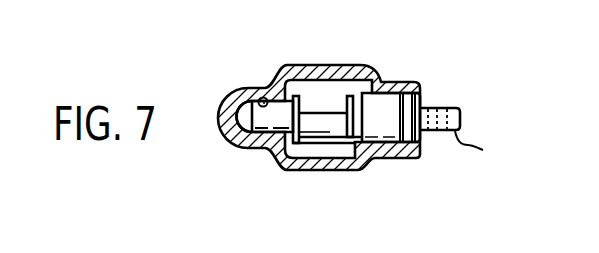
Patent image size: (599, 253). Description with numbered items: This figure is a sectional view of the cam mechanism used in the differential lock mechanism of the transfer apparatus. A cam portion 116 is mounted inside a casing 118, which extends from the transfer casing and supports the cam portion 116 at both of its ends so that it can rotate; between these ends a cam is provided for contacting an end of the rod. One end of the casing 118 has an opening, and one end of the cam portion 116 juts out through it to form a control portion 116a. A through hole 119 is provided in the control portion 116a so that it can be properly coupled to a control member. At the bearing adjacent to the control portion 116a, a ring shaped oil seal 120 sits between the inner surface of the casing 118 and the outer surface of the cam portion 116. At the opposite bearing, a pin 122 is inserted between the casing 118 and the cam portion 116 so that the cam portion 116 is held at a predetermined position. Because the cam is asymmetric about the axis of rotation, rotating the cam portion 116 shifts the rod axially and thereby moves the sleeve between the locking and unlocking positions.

The casing 118 is at (284, 172).
The cam portion 116 is at (333, 144).
The control portion 116a is at (492, 149).
The through hole 119 is at (433, 108).
The ring shaped oil seal 120 is at (405, 143).
The pin 122 is at (262, 99).